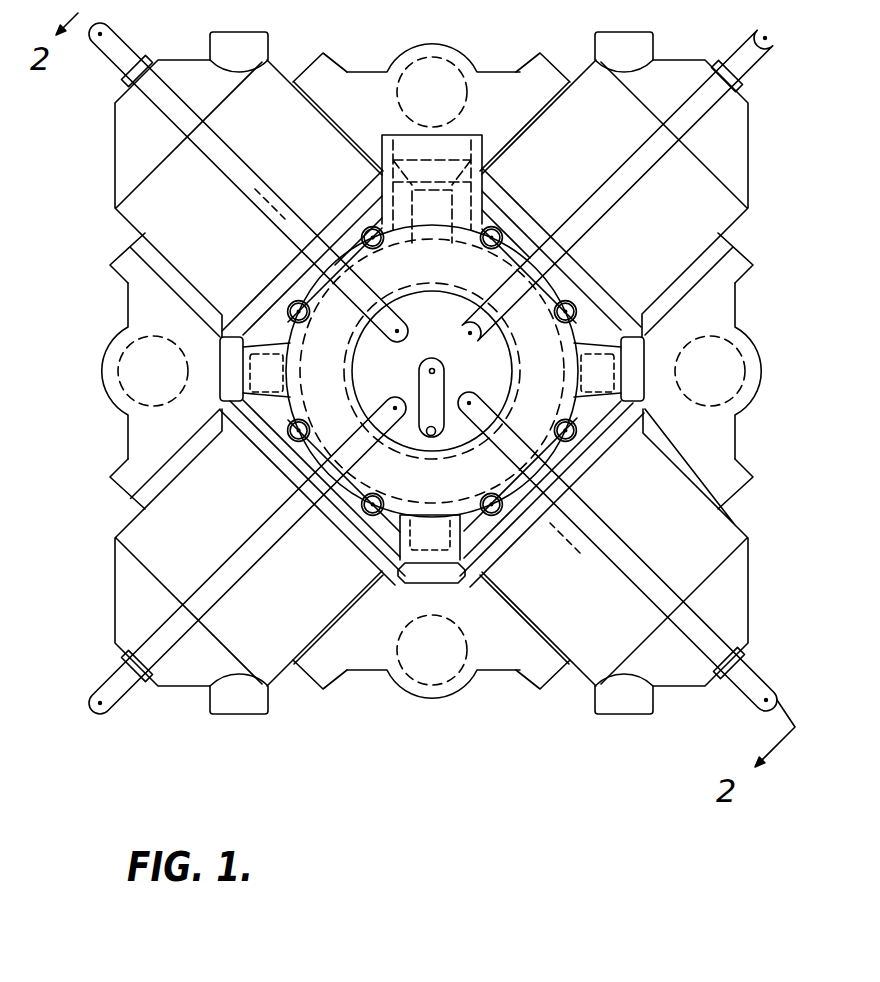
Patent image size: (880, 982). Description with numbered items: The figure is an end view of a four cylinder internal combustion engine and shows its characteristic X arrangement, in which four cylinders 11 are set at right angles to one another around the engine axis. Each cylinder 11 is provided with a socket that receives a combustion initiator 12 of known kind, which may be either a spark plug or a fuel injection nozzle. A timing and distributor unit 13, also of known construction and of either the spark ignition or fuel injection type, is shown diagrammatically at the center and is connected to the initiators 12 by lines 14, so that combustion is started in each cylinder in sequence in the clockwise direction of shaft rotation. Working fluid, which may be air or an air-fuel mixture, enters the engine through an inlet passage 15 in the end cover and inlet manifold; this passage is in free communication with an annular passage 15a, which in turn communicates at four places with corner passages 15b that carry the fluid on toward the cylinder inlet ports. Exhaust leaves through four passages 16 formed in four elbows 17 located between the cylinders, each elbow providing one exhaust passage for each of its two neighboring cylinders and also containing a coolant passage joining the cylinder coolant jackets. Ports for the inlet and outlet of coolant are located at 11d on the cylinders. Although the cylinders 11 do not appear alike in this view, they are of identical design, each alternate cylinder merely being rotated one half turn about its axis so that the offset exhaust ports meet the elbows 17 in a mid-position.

The cylinder 11 is at (115, 148).
The coolant inlet and outlet ports 11d is at (241, 38).
The combustion initiator 12 is at (118, 80).
The timing and distributor unit 13 is at (366, 361).
The lines 14 is at (776, 34).
The inlet passage 15 is at (452, 148).
The annular passage 15a is at (465, 270).
The corner passages 15b is at (600, 371).
The exhaust passage 16 is at (446, 74).
The elbow 17 is at (353, 82).